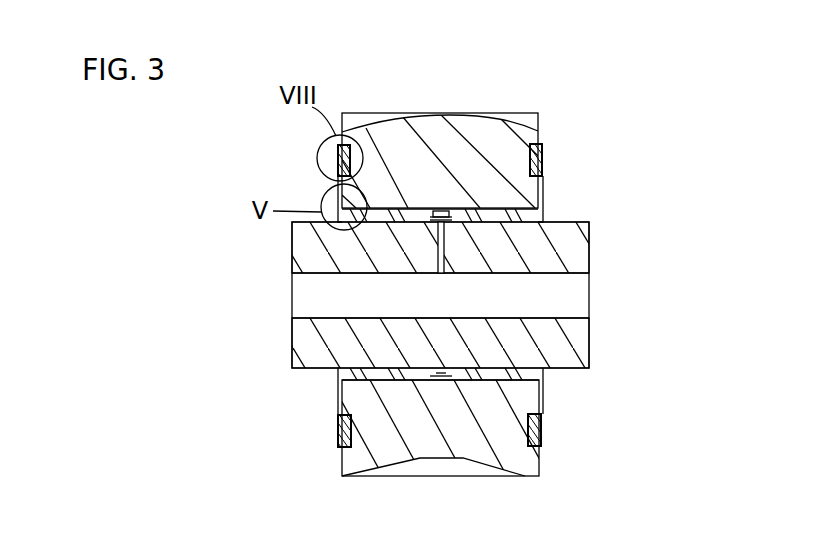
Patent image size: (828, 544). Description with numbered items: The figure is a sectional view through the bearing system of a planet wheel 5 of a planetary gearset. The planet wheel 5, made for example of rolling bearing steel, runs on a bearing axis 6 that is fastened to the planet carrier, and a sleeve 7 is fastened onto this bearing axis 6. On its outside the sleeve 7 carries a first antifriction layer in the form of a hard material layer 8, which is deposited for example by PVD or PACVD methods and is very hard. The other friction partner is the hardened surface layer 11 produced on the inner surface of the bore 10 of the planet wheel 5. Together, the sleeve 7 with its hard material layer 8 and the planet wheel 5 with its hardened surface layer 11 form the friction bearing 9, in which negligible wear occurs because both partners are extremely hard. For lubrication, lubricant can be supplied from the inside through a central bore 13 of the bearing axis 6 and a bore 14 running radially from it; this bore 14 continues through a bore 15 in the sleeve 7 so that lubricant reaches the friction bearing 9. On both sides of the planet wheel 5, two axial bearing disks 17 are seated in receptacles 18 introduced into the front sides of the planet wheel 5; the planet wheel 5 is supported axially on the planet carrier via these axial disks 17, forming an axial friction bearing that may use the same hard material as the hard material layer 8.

The planet wheel 5 is at (484, 136).
The bearing axis 6 is at (560, 346).
The sleeve 7 is at (336, 373).
The hard material layer 8 is at (487, 224).
The friction bearing 9 is at (328, 204).
The bore 10 is at (497, 208).
The hardened surface layer 11 is at (416, 198).
The central bore 13 is at (306, 305).
The bore 14 is at (431, 249).
The bore 15 is at (440, 210).
The axial bearing disk 17 is at (338, 157).
The receptacle 18 is at (530, 150).